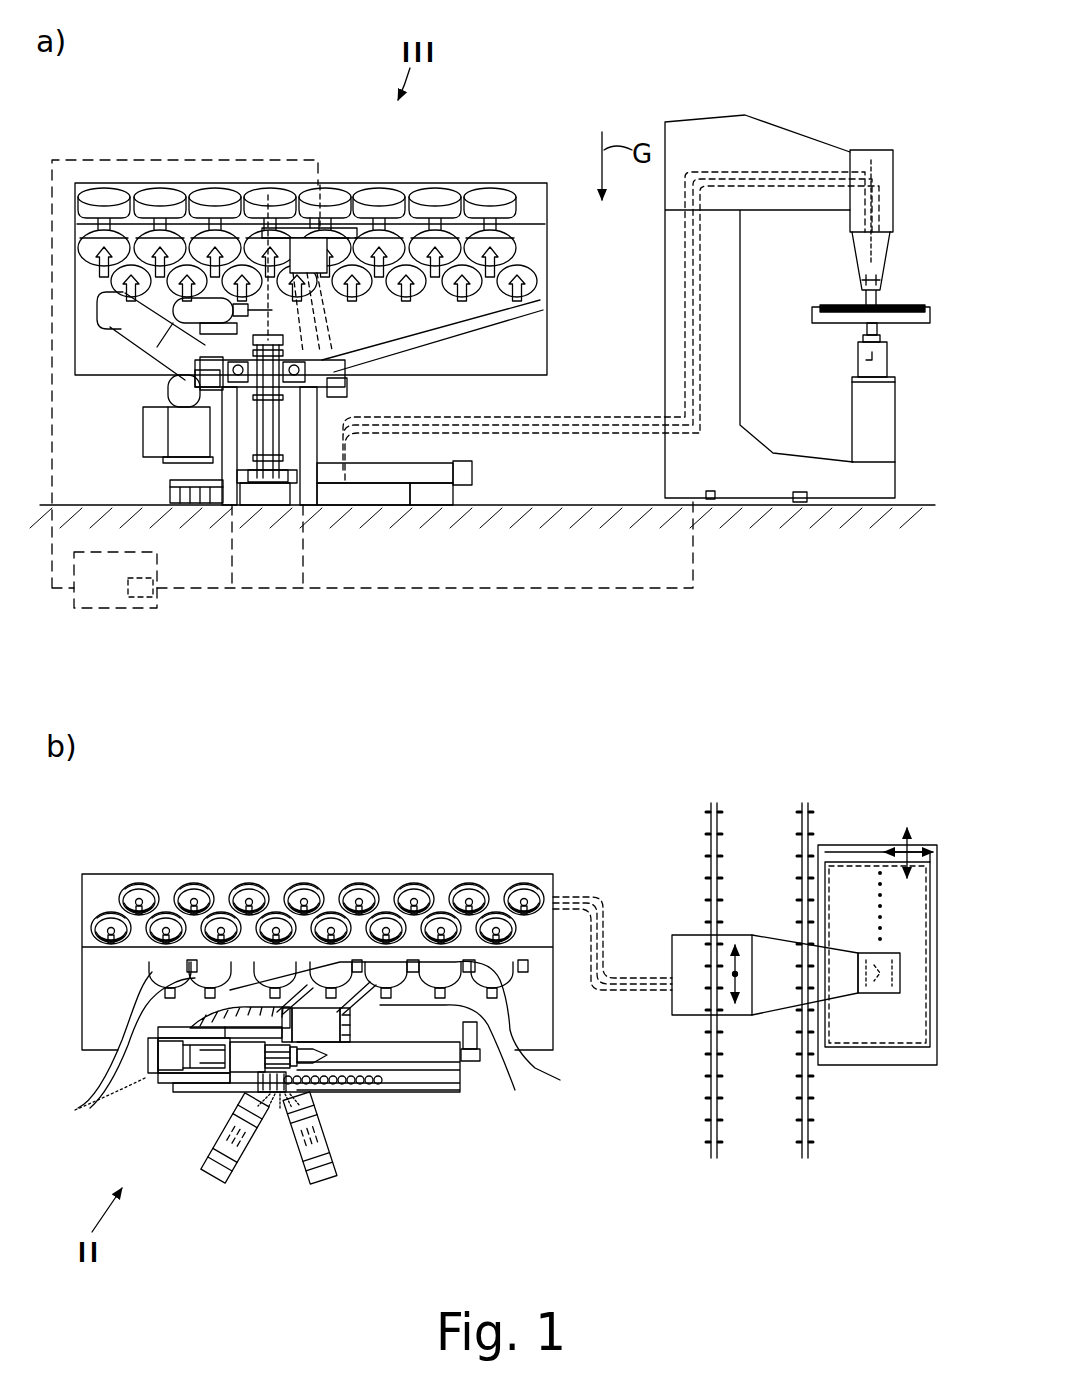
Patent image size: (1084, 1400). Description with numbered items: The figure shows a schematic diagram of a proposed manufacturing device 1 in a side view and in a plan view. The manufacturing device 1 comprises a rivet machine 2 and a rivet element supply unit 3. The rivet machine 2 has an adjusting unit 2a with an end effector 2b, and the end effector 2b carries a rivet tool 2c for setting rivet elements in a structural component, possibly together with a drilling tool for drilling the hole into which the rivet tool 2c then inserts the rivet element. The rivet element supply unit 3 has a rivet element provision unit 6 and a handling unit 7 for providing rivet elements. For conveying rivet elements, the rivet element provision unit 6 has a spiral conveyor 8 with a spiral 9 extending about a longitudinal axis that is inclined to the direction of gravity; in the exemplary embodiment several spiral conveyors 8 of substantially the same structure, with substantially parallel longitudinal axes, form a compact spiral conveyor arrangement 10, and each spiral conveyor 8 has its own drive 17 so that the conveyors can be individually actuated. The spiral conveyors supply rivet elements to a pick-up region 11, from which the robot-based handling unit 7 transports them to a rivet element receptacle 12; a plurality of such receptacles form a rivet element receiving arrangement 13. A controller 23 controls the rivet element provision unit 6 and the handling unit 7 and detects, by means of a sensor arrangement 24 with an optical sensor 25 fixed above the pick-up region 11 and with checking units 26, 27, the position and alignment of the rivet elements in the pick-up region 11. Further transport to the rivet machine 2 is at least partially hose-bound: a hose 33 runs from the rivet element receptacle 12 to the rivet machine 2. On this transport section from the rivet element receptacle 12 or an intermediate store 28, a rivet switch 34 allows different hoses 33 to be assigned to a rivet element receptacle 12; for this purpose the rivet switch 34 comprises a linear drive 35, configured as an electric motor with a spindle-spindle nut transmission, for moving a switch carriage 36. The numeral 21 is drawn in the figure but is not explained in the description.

The manufacturing device 1 is at (792, 58).
The rivet machine 2 is at (680, 86).
The adjusting unit 2a is at (768, 148).
The end effector 2b is at (848, 250).
The rivet tool 2c is at (895, 282).
The rivet element supply unit 3 is at (268, 125).
The rivet element provision unit 6 is at (80, 178).
The handling unit 7 is at (140, 394).
The spiral conveyor 8 is at (230, 116).
The spiral 9 is at (258, 848).
The spiral conveyor arrangement 10 is at (96, 836).
The pick-up region 11 is at (362, 390).
The rivet element receptacle 12 is at (283, 1105).
The rivet element receiving arrangement 13 is at (247, 1176).
The drive 17 is at (178, 278).
The cabinet support 21 is at (378, 318).
The controller 23 is at (100, 606).
The sensor arrangement 24 is at (325, 1095).
The optical sensor 25 is at (322, 256).
The checking unit 26 is at (206, 515).
The checking unit 27 is at (333, 522).
The intermediate store 28 is at (268, 512).
The hose 33 is at (546, 445).
The rivet switch 34 is at (200, 515).
The linear drive 35 is at (487, 1070).
The switch carriage 36 is at (168, 472).